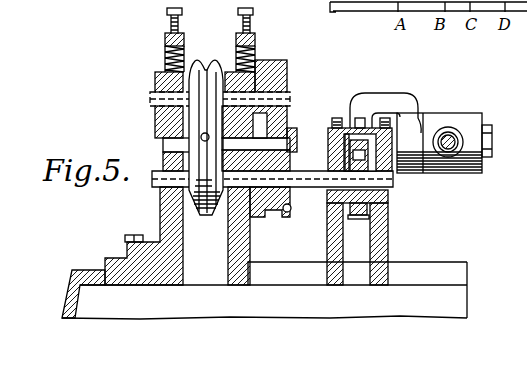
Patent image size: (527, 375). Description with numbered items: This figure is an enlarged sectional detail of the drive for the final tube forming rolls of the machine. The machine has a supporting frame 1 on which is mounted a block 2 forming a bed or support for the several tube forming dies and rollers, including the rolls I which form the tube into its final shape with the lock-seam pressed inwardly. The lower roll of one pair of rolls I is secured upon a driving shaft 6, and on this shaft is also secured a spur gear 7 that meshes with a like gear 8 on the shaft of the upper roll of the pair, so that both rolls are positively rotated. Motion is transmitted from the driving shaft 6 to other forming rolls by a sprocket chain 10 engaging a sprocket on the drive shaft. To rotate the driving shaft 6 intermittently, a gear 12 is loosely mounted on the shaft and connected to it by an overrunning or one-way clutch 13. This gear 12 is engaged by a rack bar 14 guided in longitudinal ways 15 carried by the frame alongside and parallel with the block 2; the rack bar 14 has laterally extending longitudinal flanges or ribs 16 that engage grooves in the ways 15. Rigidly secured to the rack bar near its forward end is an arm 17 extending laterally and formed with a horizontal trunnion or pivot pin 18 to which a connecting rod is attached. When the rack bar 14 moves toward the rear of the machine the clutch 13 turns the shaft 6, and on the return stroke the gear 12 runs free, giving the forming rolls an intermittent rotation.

The supporting frame 1 is at (87, 268).
The block 2 is at (158, 210).
The driving shaft 6 is at (316, 190).
The spur gear 7 is at (270, 218).
The gear 8 is at (270, 62).
The sprocket chain 10 is at (293, 128).
The gear 12 is at (363, 219).
The one-way clutch 13 is at (388, 202).
The rack bar 14 is at (350, 125).
The longitudinal ways 15 is at (328, 150).
The longitudinal flanges or ribs 16 is at (333, 133).
The arm 17 is at (386, 93).
The trunnion or pivot pin 18 is at (443, 113).
The rolls I is at (205, 62).